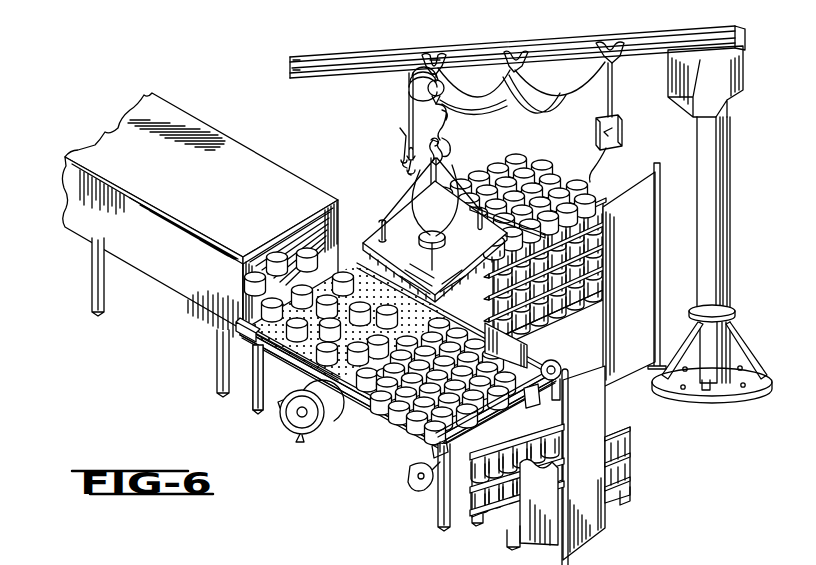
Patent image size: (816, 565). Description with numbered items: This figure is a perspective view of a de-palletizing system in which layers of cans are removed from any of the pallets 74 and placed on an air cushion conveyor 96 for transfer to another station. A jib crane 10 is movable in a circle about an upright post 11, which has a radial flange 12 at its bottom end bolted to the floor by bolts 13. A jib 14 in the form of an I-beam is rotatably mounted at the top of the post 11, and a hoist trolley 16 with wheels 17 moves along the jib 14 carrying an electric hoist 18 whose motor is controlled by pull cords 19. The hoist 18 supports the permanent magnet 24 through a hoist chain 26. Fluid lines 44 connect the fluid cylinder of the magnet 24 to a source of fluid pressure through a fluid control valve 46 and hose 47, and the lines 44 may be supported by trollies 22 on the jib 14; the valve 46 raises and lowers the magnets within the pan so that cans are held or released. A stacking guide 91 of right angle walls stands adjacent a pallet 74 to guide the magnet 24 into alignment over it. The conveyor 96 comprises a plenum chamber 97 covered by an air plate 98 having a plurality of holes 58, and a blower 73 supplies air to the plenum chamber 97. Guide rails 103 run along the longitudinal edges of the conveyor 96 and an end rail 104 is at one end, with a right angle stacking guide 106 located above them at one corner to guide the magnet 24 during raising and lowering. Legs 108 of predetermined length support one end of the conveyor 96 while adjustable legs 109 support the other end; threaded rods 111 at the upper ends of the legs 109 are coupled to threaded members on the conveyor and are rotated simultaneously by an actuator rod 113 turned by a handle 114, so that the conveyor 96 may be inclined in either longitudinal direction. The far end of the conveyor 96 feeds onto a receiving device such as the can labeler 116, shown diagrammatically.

The jib crane 10 is at (733, 131).
The upright post 11 is at (731, 209).
The radial flange 12 is at (702, 388).
The bolts 13 is at (750, 390).
The jib 14 is at (346, 54).
The hoist trolley 16 is at (432, 62).
The wheels 17 is at (425, 58).
The electric hoist 18 is at (409, 98).
The pull cords 19 is at (404, 140).
The trollies 22 is at (514, 54).
The permanent magnet 24 is at (372, 220).
The hoist chain 26 is at (441, 108).
The fluid lines 44 is at (545, 106).
The fluid control valve 46 is at (623, 133).
The hose 47 is at (603, 152).
The holes 58 is at (310, 350).
The blower 73 is at (299, 428).
The pallets 74 is at (629, 494).
The stacking guide 91 is at (661, 230).
The conveyor 96 is at (395, 430).
The plenum chamber 97 is at (382, 413).
The air plate 98 is at (361, 293).
The guide rails 103 is at (252, 343).
The end rail 104 is at (484, 392).
The right angle stacking guide 106 is at (495, 328).
The legs 108 is at (253, 397).
The adjustable legs 109 is at (440, 505).
The threaded rods 111 is at (436, 452).
The actuator rod 113 is at (468, 409).
The handle 114 is at (413, 482).
The can labeler 116 is at (207, 128).